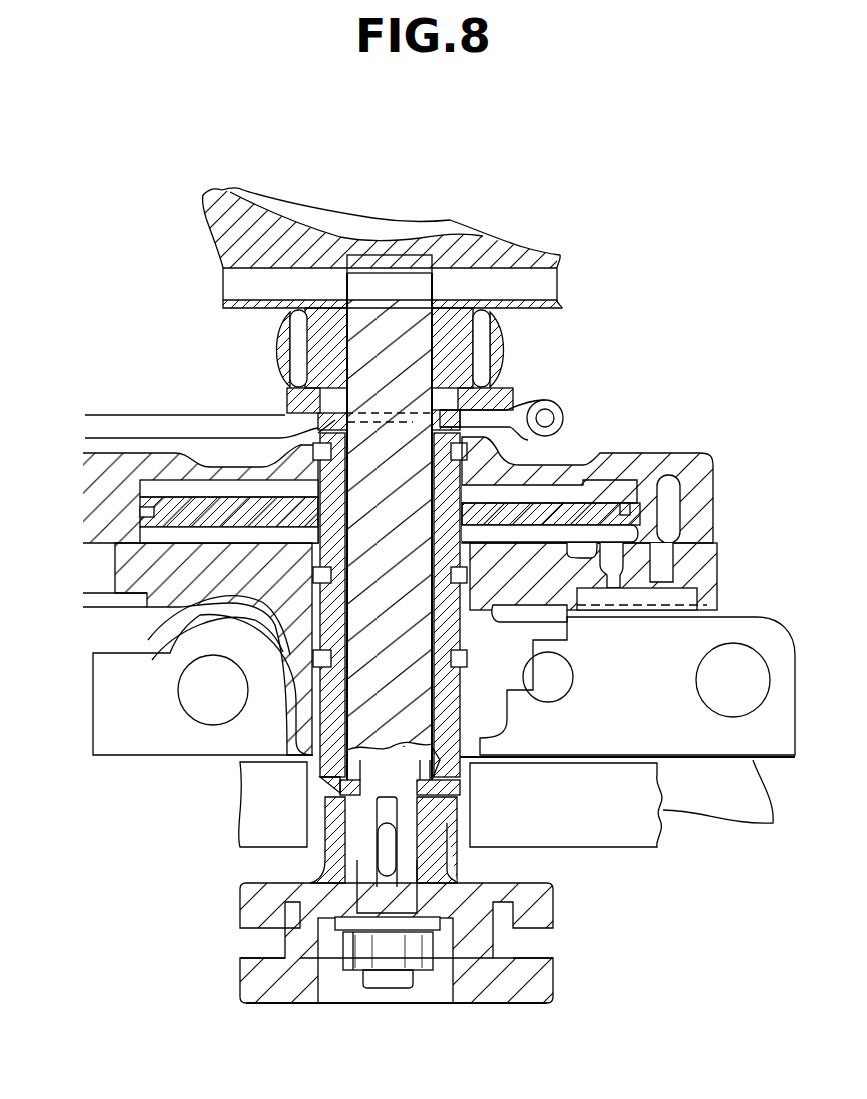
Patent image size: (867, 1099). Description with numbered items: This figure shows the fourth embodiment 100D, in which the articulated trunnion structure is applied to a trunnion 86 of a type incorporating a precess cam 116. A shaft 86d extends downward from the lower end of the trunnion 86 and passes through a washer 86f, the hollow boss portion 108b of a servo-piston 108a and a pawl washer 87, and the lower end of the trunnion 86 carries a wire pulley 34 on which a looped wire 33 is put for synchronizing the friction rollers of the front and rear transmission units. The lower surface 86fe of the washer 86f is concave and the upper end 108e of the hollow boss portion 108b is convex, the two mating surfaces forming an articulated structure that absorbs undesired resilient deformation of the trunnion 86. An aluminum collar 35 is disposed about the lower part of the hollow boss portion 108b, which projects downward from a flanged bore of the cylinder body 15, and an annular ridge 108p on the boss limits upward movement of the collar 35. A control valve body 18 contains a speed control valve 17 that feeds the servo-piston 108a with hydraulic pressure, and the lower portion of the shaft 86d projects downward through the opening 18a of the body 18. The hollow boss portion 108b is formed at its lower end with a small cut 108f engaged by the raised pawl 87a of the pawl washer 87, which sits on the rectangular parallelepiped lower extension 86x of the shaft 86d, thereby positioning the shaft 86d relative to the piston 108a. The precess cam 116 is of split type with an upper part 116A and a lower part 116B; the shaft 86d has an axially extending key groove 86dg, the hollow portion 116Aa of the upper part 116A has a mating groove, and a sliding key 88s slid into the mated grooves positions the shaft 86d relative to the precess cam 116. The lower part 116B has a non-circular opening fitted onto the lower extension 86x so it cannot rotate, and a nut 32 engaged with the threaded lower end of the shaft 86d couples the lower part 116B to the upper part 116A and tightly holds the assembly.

The fourth embodiment 100D is at (697, 148).
The trunnion 86 is at (215, 215).
The shaft 86d is at (412, 350).
The upper end of the hollow boss portion 108e is at (325, 393).
The wire pulley 34 is at (530, 408).
The washer 86f is at (552, 420).
The lower surface of the washer 86fe is at (330, 432).
The looped wire 33 is at (97, 415).
The annular ridge 108p is at (330, 665).
The hollow boss portion 108b is at (458, 655).
The servo-piston 108a is at (582, 495).
The cylinder body 15 is at (720, 578).
The speed control valve 17 is at (765, 655).
The collar 35 is at (453, 750).
The raised pawl 87a is at (330, 788).
The pawl washer 87 is at (362, 795).
The lower extension 86x is at (420, 812).
The hollow portion 116Aa is at (430, 840).
The opening 18a is at (655, 783).
The control valve body 18 is at (745, 808).
The small cut 108f is at (335, 805).
The key groove 86dg is at (372, 890).
The upper part of the precess cam 116A is at (540, 925).
The sliding key 88s is at (472, 892).
The lower part of the precess cam 116B is at (505, 1003).
The nut 32 is at (355, 975).
The precess cam 116 is at (558, 1003).